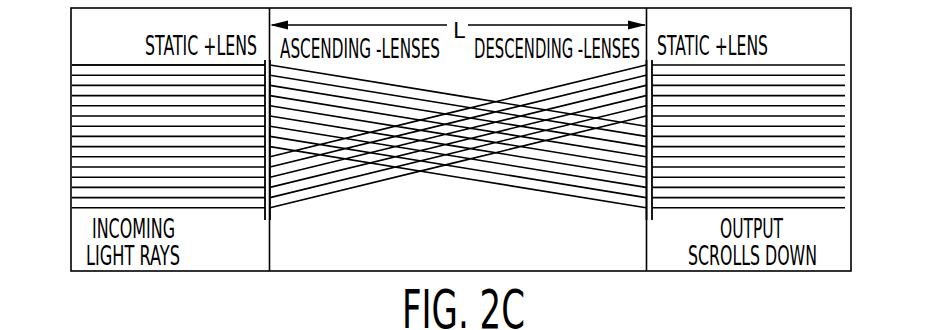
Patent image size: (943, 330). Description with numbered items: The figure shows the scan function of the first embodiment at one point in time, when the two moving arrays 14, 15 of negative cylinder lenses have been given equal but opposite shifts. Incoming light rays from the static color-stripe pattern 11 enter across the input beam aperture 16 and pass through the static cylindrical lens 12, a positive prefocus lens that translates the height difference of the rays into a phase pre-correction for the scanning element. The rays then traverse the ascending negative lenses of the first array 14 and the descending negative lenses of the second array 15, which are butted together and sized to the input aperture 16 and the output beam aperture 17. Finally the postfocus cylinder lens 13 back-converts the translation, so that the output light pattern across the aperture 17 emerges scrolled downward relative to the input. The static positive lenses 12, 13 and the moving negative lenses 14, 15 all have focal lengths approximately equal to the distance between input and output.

The static color-stripe pattern 11 is at (106, 65).
The static cylindrical lens 12 is at (265, 207).
The postfocus cylinder lens 13 is at (662, 207).
The array of negative cylinder lenses 14 is at (270, 205).
The array of negative cylinder lenses 15 is at (648, 210).
The input beam aperture 16 is at (67, 63).
The output beam aperture 17 is at (858, 65).